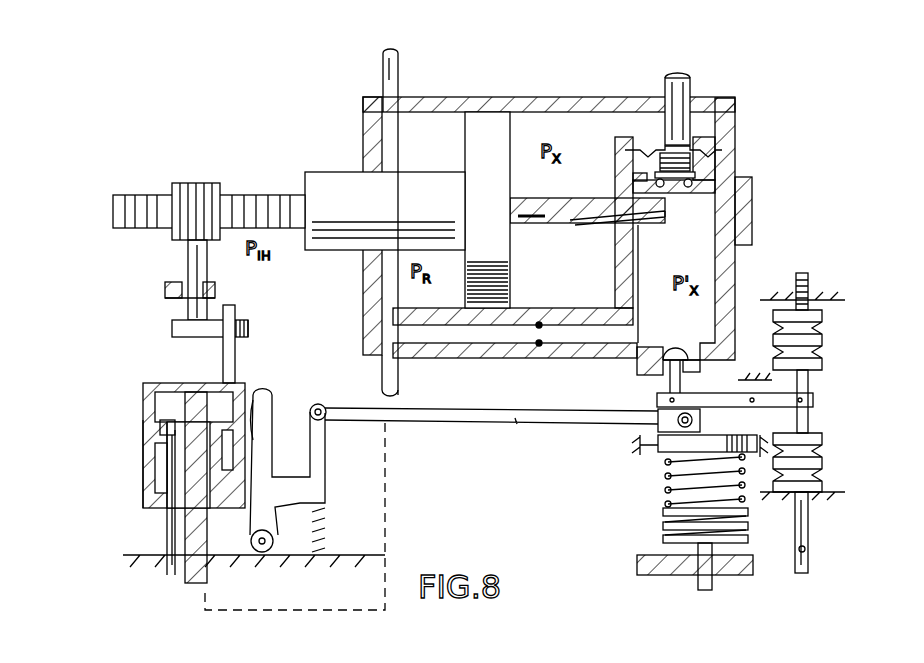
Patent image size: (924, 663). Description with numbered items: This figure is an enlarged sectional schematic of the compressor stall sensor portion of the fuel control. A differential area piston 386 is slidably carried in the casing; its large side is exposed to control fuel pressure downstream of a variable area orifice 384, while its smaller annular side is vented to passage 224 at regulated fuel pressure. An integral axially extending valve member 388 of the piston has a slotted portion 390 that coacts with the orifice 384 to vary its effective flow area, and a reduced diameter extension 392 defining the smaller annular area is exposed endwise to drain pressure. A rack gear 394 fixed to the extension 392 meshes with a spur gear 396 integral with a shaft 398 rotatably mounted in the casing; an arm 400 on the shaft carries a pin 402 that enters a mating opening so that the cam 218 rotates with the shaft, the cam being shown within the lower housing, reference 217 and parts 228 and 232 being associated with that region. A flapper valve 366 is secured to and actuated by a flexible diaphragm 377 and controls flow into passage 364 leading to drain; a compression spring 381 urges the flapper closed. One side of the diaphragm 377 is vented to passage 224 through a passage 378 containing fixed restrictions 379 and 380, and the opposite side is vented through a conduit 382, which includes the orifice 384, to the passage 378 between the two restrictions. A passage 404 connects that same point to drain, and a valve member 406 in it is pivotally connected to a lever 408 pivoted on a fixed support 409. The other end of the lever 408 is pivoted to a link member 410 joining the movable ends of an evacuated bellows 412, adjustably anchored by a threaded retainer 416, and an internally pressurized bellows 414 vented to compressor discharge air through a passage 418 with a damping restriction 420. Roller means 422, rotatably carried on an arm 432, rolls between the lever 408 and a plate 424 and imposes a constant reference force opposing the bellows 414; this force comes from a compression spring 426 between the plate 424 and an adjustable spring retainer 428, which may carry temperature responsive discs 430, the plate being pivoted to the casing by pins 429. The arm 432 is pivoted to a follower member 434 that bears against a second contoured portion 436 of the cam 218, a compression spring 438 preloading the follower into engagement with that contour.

The valve housing 217 is at (145, 430).
The cam 218 is at (168, 383).
The passage 224 is at (383, 68).
The inner tube 228 is at (175, 580).
The valve chamber 232 is at (205, 432).
The passage 364 is at (703, 88).
The flapper valve 366 is at (690, 148).
The flexible diaphragm 377 is at (700, 160).
The passage 378 is at (580, 285).
The fixed restriction 379 is at (538, 350).
The fixed restriction 380 is at (693, 181).
The compression spring 381 is at (695, 172).
The conduit 382 is at (612, 350).
The variable area orifice 384 is at (615, 242).
The differential area piston 386 is at (487, 210).
The valve member 388 is at (576, 212).
The slotted portion 390 is at (660, 226).
The reduced diameter extension 392 is at (385, 211).
The rack gear 394 is at (258, 205).
The spur gear 396 is at (190, 195).
The shaft 398 is at (190, 278).
The arm 400 is at (190, 328).
The pin 402 is at (236, 312).
The passage 404 is at (700, 368).
The valve member 406 is at (676, 347).
The lever 408 is at (815, 400).
The fixed support 409 is at (730, 383).
The link member 410 is at (810, 428).
The evacuated bellows 412 is at (823, 335).
The internally pressurized bellows 414 is at (823, 462).
The retainer 416 is at (810, 285).
The passage 418 is at (810, 535).
The damping restriction 420 is at (808, 549).
The roller means 422 is at (660, 412).
The plate 424 is at (660, 447).
The compression spring 426 is at (668, 472).
The adjustable spring retainer 428 is at (663, 540).
The pins 429 is at (757, 445).
The temperature responsive discs or capsules 430 is at (750, 530).
The arm 432 is at (517, 424).
The follower member 434 is at (282, 405).
The second contoured portion 436 is at (257, 385).
The compression spring 438 is at (325, 530).